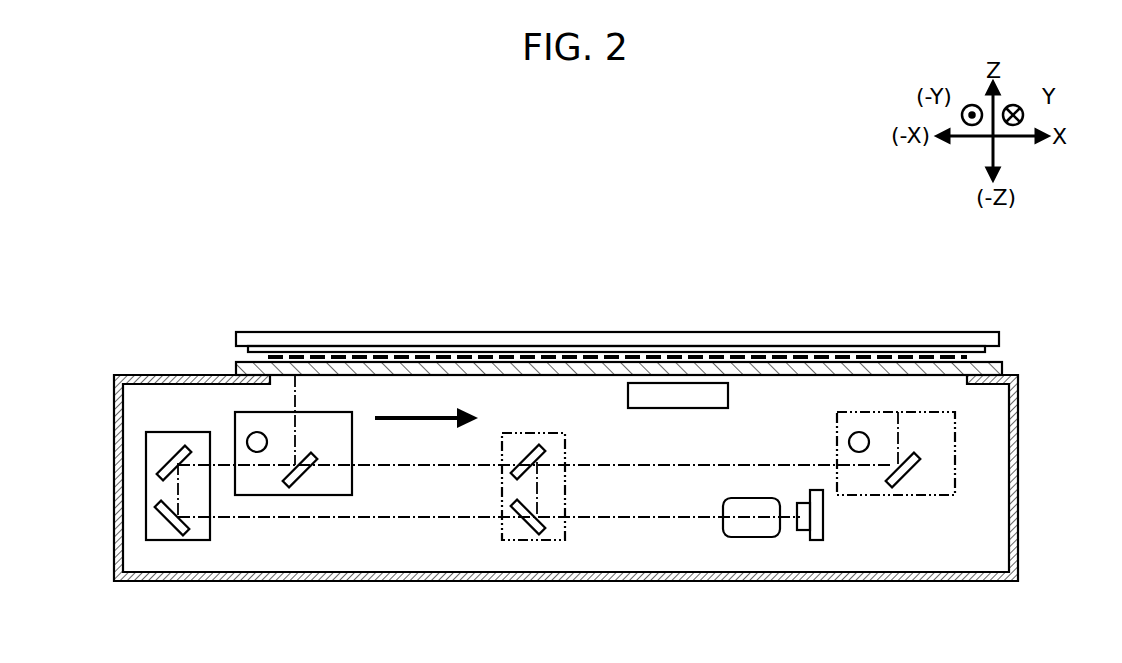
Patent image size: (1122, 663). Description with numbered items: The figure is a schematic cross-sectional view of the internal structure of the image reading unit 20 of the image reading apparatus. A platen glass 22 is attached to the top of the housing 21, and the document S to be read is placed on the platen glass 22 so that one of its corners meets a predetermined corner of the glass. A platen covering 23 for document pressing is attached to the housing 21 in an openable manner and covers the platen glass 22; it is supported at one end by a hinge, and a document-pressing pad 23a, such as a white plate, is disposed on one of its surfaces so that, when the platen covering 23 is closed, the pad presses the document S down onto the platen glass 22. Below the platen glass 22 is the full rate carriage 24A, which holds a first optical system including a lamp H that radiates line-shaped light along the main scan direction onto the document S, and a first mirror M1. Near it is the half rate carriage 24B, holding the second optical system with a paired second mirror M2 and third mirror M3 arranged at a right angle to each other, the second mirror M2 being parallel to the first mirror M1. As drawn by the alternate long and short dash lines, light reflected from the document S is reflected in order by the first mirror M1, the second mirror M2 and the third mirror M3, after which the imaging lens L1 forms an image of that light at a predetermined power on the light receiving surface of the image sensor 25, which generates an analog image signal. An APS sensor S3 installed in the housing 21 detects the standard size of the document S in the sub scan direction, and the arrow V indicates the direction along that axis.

The image reading unit 20 is at (138, 248).
The housing 21 is at (114, 400).
The platen glass 22 is at (240, 362).
The platen covering 23 is at (637, 291).
The document-pressing pad 23a is at (972, 352).
The document S is at (310, 357).
The APS sensor S3 is at (688, 393).
The lamp H is at (254, 446).
The first mirror M1 is at (312, 478).
The second mirror M2 is at (160, 472).
The third mirror M3 is at (162, 526).
The full rate carriage 24A is at (314, 451).
The half rate carriage 24B is at (201, 509).
The imaging lens L1 is at (758, 527).
The image sensor 25 is at (815, 528).
The movement direction V is at (437, 419).